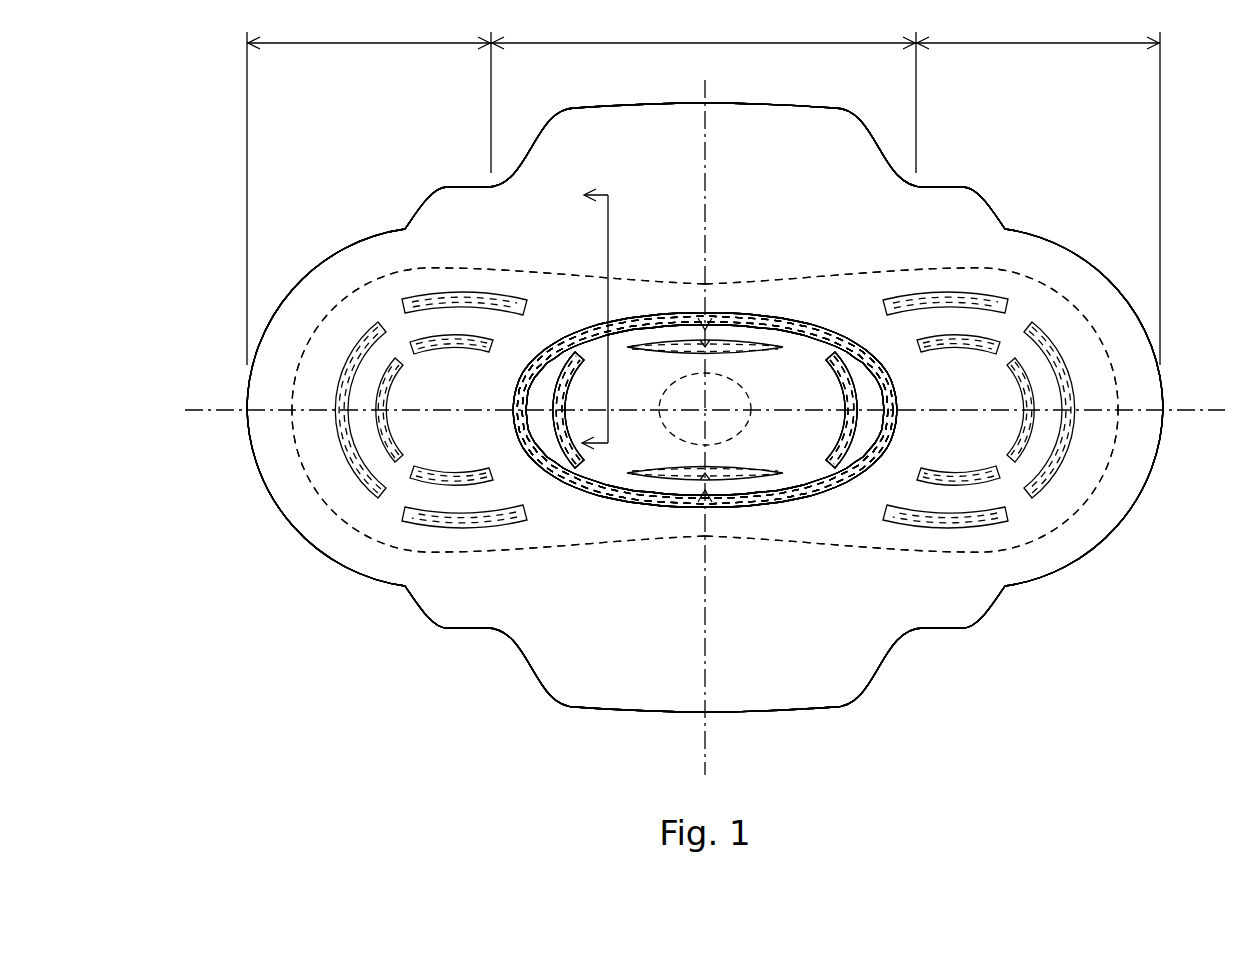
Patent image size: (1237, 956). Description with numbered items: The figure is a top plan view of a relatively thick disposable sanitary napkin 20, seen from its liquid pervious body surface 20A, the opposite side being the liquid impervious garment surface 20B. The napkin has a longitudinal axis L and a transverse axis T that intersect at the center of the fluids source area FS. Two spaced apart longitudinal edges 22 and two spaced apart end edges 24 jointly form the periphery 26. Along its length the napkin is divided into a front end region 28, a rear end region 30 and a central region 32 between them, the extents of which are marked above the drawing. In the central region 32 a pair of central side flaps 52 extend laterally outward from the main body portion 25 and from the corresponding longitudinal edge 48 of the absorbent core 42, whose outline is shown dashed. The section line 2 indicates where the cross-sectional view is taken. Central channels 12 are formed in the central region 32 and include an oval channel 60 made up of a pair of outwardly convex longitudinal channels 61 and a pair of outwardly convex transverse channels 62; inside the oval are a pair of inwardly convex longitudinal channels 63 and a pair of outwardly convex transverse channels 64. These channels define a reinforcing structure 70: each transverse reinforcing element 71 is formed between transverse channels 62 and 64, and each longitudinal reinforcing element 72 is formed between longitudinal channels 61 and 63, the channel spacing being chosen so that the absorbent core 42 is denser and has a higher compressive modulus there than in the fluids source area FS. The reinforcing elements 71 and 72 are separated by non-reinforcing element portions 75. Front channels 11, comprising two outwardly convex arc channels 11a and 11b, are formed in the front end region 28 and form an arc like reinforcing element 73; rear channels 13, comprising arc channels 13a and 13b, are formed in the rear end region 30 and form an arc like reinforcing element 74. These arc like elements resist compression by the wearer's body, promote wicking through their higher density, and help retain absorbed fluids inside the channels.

The section line 2 is at (595, 307).
The front channels 11 is at (396, 379).
The outwardly convex arc channel 11a is at (404, 310).
The outwardly convex arc channel 11b is at (433, 465).
The central channels 12 is at (663, 298).
The rear channels 13 is at (1012, 386).
The outwardly convex arc channel 13a is at (940, 296).
The outwardly convex arc channel 13b is at (975, 468).
The sanitary napkin 20 is at (371, 695).
The body surface 20A is at (395, 562).
The garment surface 20B is at (451, 592).
The longitudinal edges 22 is at (775, 104).
The end edges 24 is at (250, 437).
The main body portion 25 is at (536, 302).
The periphery 26 is at (1053, 577).
The front end region 28 is at (369, 192).
The rear end region 30 is at (1038, 192).
The central region 32 is at (703, 96).
The absorbent core 42 is at (882, 545).
The longitudinal edges of absorbent core 48 is at (647, 288).
The central side flaps 52 is at (616, 140).
The oval channel 60 is at (632, 510).
The outwardly convex longitudinal channels 61 is at (782, 313).
The outwardly convex transverse channels 62 is at (522, 378).
The inwardly convex longitudinal channels 63 is at (658, 461).
The outwardly convex transverse channels 64 is at (572, 353).
The reinforcing structure 70 is at (693, 298).
The transverse reinforcing element 71 is at (860, 383).
The longitudinal reinforcing element 72 is at (722, 317).
The arc like reinforcing element 73 is at (363, 380).
The arc like reinforcing element 74 is at (1035, 358).
The non-reinforcing element portions 75 is at (586, 354).
The fluids source area FS is at (720, 418).
The transverse axis T is at (708, 763).
The longitudinal axis L is at (1216, 408).